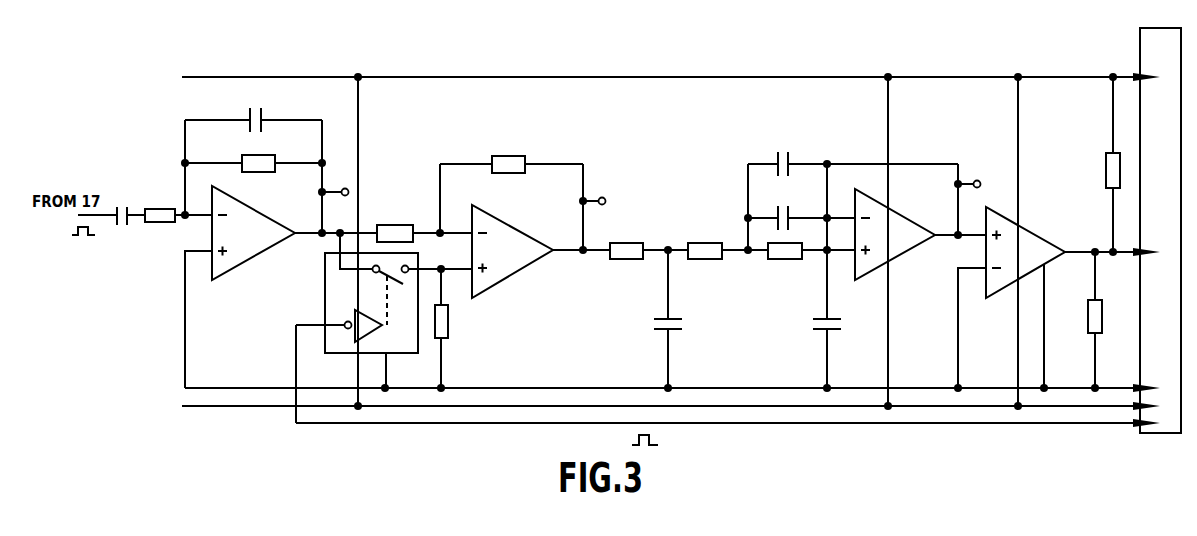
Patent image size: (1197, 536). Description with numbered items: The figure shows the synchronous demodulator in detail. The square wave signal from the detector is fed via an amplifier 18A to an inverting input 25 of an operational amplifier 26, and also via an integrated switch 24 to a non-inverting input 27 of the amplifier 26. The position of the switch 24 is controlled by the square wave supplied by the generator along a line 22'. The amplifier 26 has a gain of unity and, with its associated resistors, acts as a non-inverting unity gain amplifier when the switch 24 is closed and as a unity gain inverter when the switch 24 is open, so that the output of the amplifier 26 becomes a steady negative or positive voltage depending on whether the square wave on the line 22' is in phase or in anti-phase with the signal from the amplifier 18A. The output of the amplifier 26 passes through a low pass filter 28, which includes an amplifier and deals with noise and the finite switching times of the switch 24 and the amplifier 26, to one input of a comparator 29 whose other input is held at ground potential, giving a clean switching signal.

The amplifier 18A is at (253, 250).
The integrated switch 24 is at (409, 353).
The inverting input 25 is at (458, 232).
The operational amplifier 26 is at (503, 273).
The non-inverting input 27 is at (453, 270).
The low pass filter 28 is at (842, 280).
The comparator 29 is at (1021, 238).
The line 22' is at (718, 453).